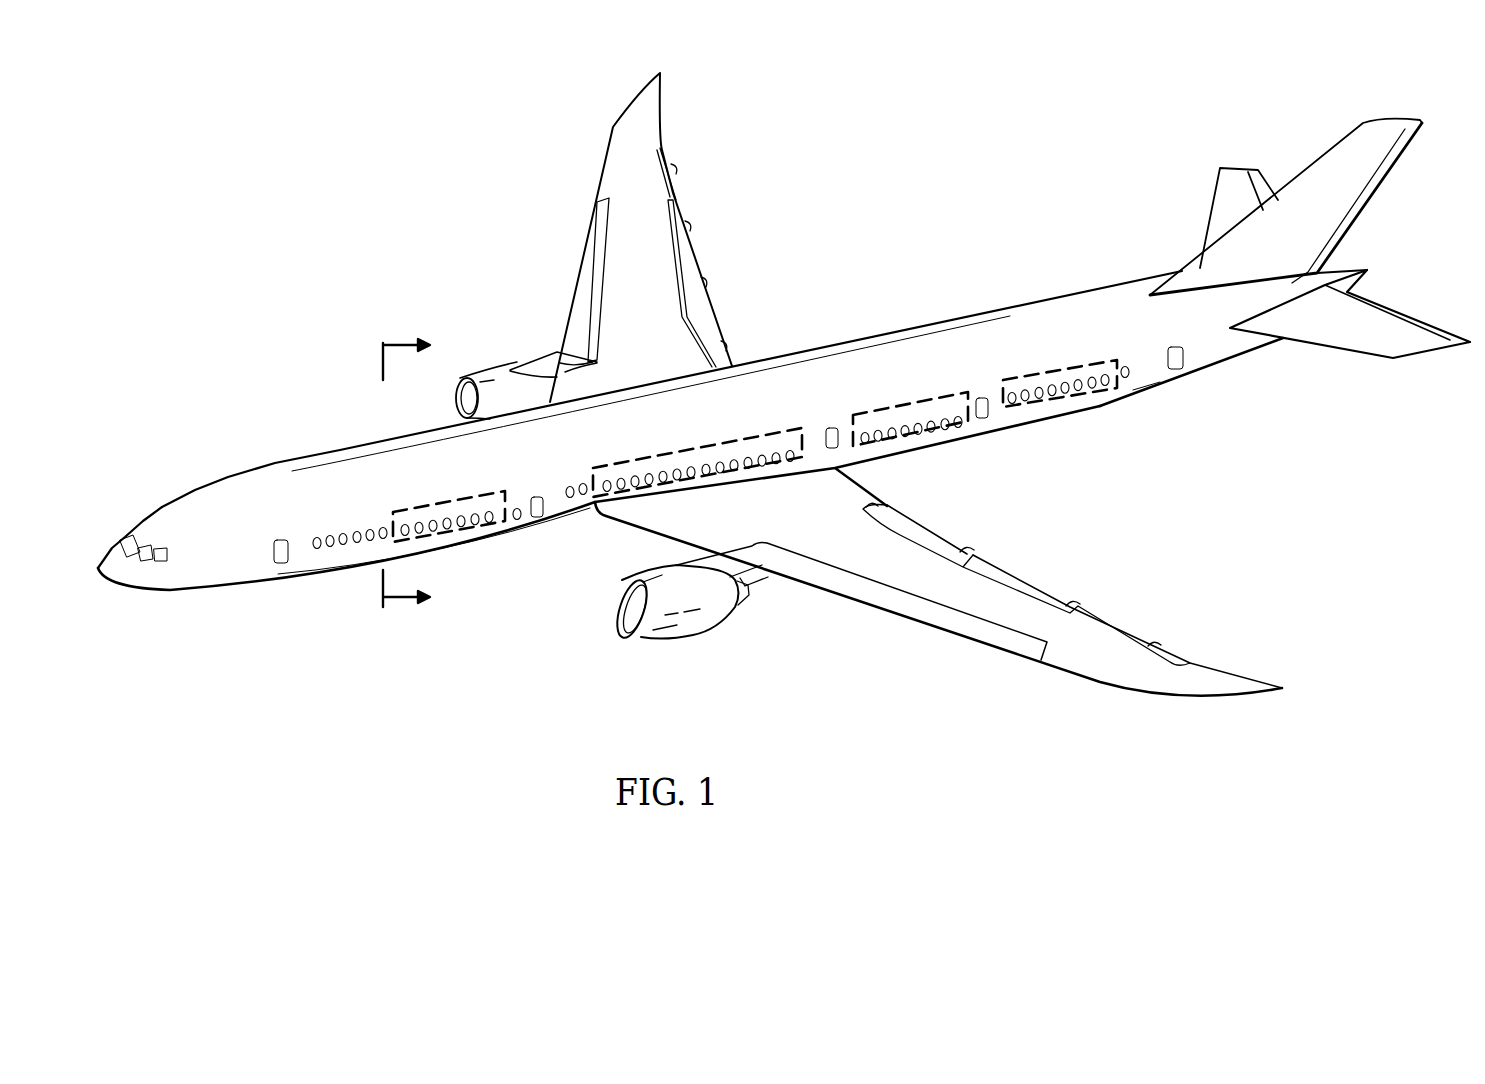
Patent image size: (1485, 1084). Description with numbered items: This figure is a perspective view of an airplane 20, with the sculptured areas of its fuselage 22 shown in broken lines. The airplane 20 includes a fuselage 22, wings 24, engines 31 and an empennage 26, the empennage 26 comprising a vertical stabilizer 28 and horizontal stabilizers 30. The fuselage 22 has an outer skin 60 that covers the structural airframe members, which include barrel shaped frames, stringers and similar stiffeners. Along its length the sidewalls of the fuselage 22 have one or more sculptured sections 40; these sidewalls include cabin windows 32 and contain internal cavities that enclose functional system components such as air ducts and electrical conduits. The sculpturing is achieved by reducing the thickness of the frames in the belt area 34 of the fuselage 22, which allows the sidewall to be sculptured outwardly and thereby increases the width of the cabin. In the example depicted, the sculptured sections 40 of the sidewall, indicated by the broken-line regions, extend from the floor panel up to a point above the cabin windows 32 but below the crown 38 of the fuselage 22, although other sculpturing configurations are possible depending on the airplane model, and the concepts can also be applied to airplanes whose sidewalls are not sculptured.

The airplane 20 is at (354, 181).
The fuselage 22 is at (257, 477).
The wings 24 is at (603, 152).
The empennage 26 is at (1249, 400).
The vertical stabilizer 28 is at (1378, 187).
The horizontal stabilizers 30 is at (1210, 215).
The engines 31 is at (683, 637).
The cabin windows 32 is at (1055, 394).
The belt area 34 is at (1120, 356).
The crown 38 is at (957, 328).
The sculptured sections 40 is at (1062, 368).
The outer skin 60 is at (347, 457).